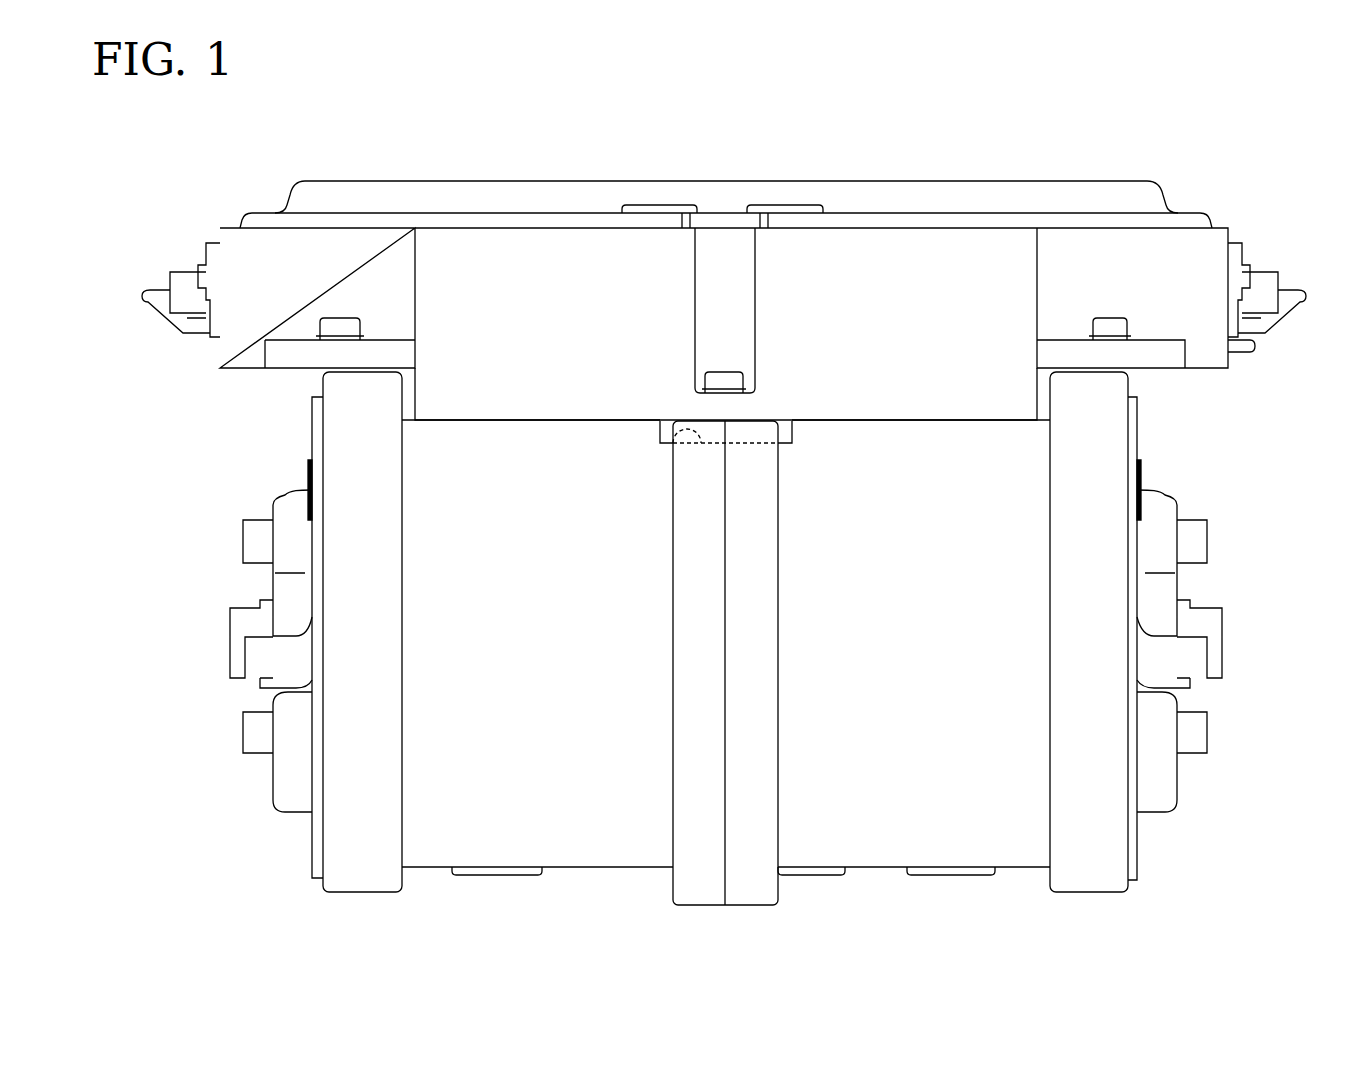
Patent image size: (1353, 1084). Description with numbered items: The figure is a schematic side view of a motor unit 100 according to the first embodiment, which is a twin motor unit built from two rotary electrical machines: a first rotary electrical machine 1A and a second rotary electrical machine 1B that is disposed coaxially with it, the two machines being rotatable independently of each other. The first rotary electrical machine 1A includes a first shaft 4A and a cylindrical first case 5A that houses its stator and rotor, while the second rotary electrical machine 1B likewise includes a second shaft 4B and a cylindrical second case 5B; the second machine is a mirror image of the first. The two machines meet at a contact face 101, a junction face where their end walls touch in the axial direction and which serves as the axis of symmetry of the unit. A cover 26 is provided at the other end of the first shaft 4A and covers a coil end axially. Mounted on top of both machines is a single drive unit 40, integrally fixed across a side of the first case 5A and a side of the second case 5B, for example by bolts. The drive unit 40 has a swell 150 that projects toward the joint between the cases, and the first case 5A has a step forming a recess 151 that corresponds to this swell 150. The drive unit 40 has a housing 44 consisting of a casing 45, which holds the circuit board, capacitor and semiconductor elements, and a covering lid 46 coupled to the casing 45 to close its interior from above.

The motor unit 100 is at (1253, 76).
The drive unit 40 is at (1030, 182).
The housing 44 is at (993, 95).
The casing 45 is at (945, 252).
The covering lid 46 is at (908, 182).
The swell 150 is at (800, 432).
The recess 151 is at (670, 445).
The contact face 101 is at (725, 853).
The first rotary electrical machine 1A is at (560, 867).
The second rotary electrical machine 1B is at (877, 867).
The first case 5A is at (430, 867).
The second case 5B is at (1020, 867).
The first shaft 4A is at (245, 623).
The second shaft 4B is at (1205, 623).
The cover 26 is at (312, 780).